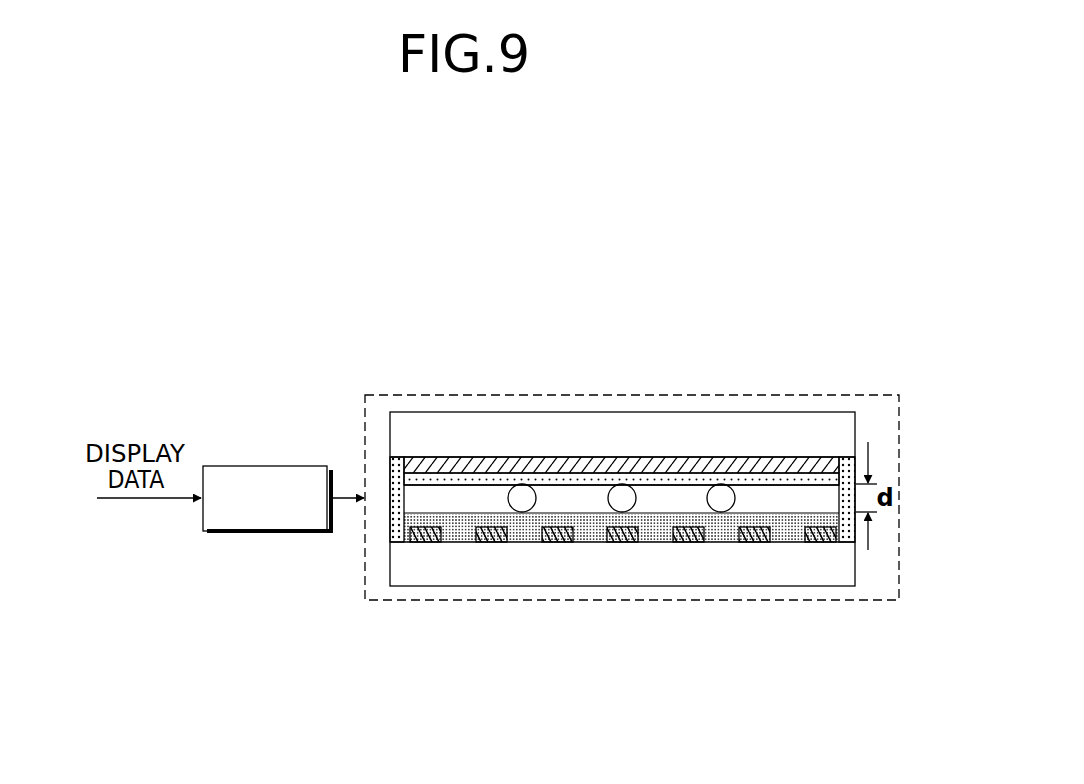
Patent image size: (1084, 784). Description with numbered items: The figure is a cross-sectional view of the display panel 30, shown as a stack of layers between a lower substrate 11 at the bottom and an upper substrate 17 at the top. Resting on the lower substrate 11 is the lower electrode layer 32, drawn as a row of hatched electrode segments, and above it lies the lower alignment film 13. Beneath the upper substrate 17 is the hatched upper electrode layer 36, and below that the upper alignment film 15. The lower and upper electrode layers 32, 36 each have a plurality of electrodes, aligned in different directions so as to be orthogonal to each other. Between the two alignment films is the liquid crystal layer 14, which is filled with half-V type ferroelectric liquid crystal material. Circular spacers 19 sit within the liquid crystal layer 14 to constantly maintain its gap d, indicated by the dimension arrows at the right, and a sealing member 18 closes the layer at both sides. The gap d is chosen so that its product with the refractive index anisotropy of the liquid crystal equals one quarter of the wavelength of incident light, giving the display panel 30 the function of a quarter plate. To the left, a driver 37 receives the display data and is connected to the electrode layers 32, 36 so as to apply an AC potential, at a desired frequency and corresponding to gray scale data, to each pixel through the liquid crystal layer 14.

The display panel 30 is at (297, 280).
The driver 37 is at (263, 466).
The upper substrate 17 is at (617, 437).
The lower substrate 11 is at (527, 562).
The upper electrode layer 36 is at (707, 466).
The upper alignment film 15 is at (790, 482).
The liquid crystal layer 14 is at (451, 508).
The spacer 19 is at (520, 496).
The lower alignment film 13 is at (652, 533).
The lower electrode layer 32 is at (753, 535).
The sealing member 18 is at (398, 520).